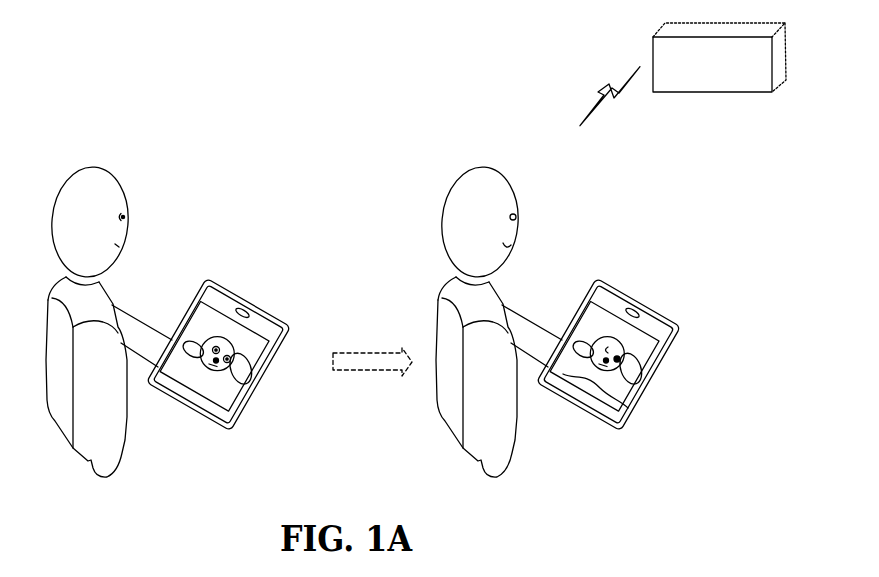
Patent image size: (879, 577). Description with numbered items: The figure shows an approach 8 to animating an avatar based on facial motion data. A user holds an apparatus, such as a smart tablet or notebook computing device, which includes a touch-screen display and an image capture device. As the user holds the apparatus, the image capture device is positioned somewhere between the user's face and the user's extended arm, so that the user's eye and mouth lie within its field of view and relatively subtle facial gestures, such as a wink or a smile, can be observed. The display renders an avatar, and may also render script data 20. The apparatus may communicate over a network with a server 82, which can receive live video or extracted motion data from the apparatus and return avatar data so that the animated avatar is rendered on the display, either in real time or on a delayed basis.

The approach 8 is at (45, 140).
The script data 20 is at (614, 407).
The server 82 is at (704, 88).